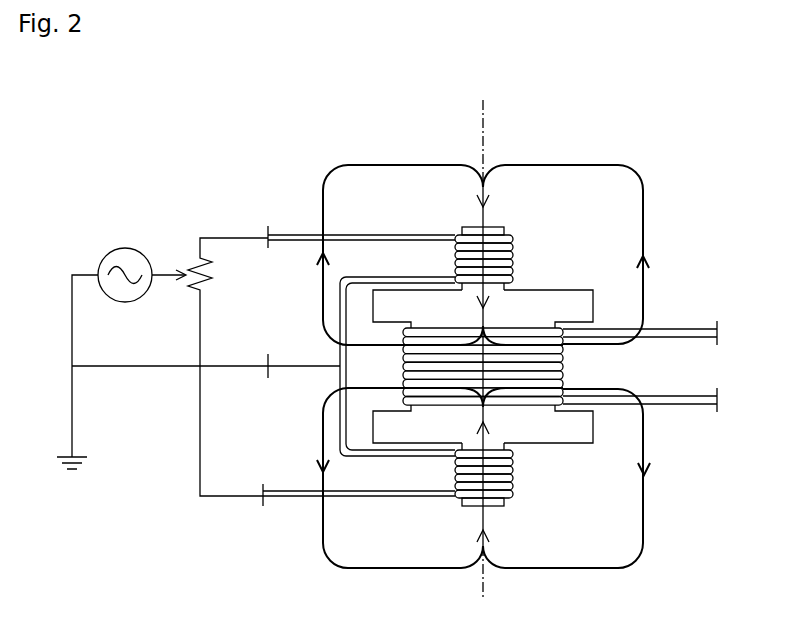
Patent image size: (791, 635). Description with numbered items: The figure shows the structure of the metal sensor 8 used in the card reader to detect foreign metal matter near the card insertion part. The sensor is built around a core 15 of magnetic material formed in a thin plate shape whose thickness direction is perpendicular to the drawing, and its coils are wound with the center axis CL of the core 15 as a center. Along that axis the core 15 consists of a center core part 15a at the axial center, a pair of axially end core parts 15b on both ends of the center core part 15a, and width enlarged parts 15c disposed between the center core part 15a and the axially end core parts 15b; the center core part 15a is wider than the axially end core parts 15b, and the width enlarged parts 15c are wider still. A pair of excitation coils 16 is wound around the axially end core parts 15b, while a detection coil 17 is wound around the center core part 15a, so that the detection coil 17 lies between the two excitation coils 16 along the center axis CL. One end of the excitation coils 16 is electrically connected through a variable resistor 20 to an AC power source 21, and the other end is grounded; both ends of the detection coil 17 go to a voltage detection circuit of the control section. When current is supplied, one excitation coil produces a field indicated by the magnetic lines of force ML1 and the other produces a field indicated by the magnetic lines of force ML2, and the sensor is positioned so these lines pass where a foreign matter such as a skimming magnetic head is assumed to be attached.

The metal sensor 8 is at (661, 81).
The core 15 is at (504, 373).
The center core part 15a is at (556, 323).
The axially end core parts 15b is at (494, 227).
The width enlarged parts 15c is at (571, 290).
The excitation coils 16 is at (396, 235).
The detection coil 17 is at (697, 326).
The variable resistor 20 is at (179, 288).
The AC power source 21 is at (126, 248).
The center axis CL is at (484, 133).
The magnetic lines of force ML1 is at (645, 213).
The magnetic lines of force ML2 is at (645, 518).